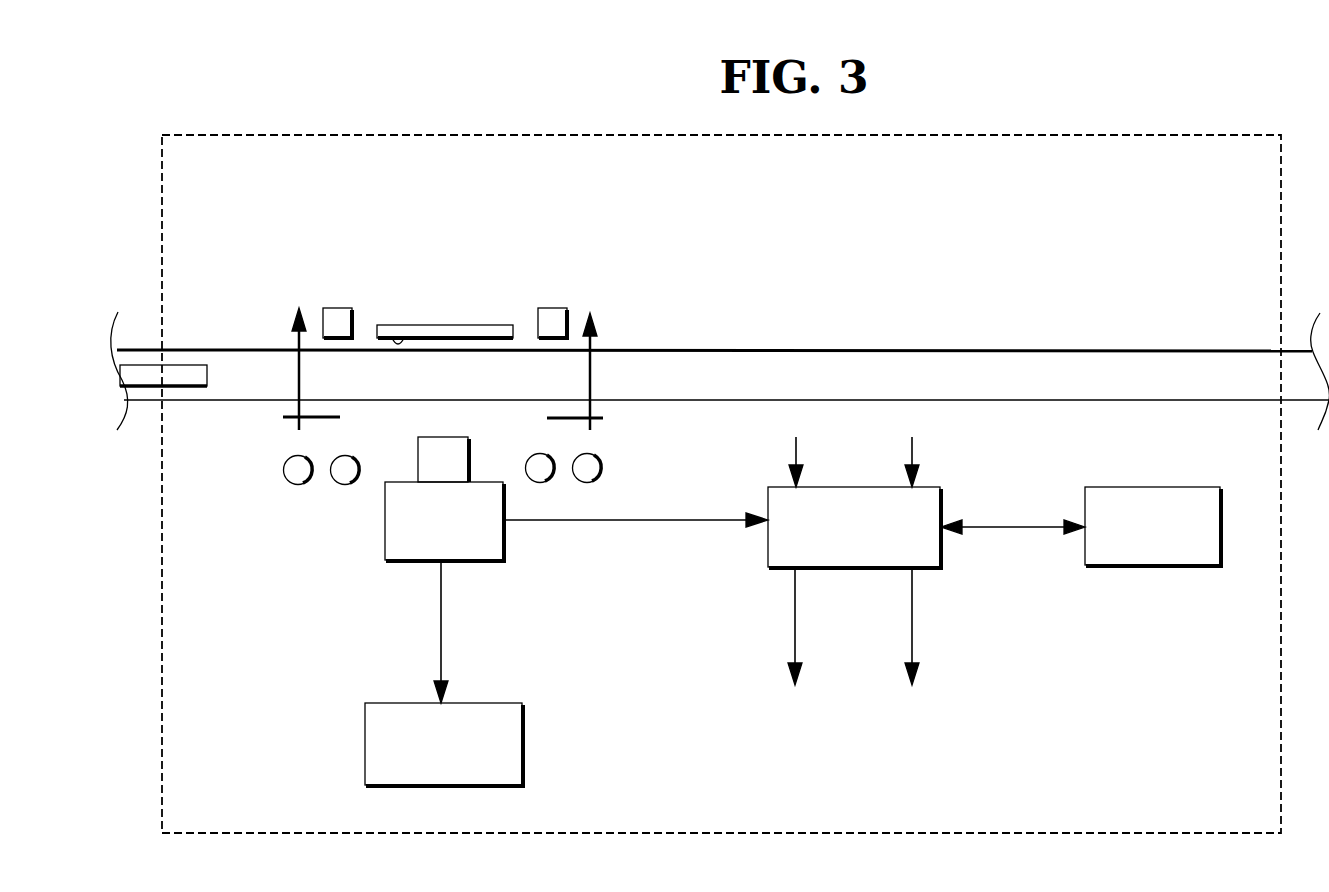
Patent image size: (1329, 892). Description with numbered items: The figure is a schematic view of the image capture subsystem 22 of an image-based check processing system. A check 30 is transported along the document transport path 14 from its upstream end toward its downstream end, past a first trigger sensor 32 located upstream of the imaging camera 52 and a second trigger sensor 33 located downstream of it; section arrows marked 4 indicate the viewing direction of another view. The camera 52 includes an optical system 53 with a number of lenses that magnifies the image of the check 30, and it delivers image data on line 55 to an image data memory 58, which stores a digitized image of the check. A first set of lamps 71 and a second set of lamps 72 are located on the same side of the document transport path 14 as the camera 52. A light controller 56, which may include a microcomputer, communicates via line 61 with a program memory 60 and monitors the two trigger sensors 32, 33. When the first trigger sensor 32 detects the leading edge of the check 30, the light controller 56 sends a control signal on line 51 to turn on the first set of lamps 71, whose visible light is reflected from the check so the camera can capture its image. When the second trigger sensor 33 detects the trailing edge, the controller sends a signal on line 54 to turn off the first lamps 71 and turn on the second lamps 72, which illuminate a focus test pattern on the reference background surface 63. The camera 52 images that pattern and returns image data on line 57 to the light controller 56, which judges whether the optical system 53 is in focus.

The image capture subsystem 22 is at (422, 135).
The document transport path 14 is at (1126, 366).
The check 30 is at (183, 387).
The section line FIG. 4 is at (443, 355).
The first trigger sensor 32 is at (338, 308).
The second trigger sensor 33 is at (552, 308).
The reference background surface 63 is at (400, 325).
The optical system 53 is at (445, 437).
The imaging camera 52 is at (385, 522).
The line 57 is at (673, 520).
The light controller 56 is at (930, 487).
The line 61 is at (1012, 527).
The program memory 60 is at (1165, 487).
The line 55 is at (440, 622).
The image data memory 58 is at (378, 703).
The line 51 is at (795, 612).
The line 54 is at (912, 615).
The first set of lamps 71 is at (347, 455).
The second set of lamps 72 is at (293, 485).